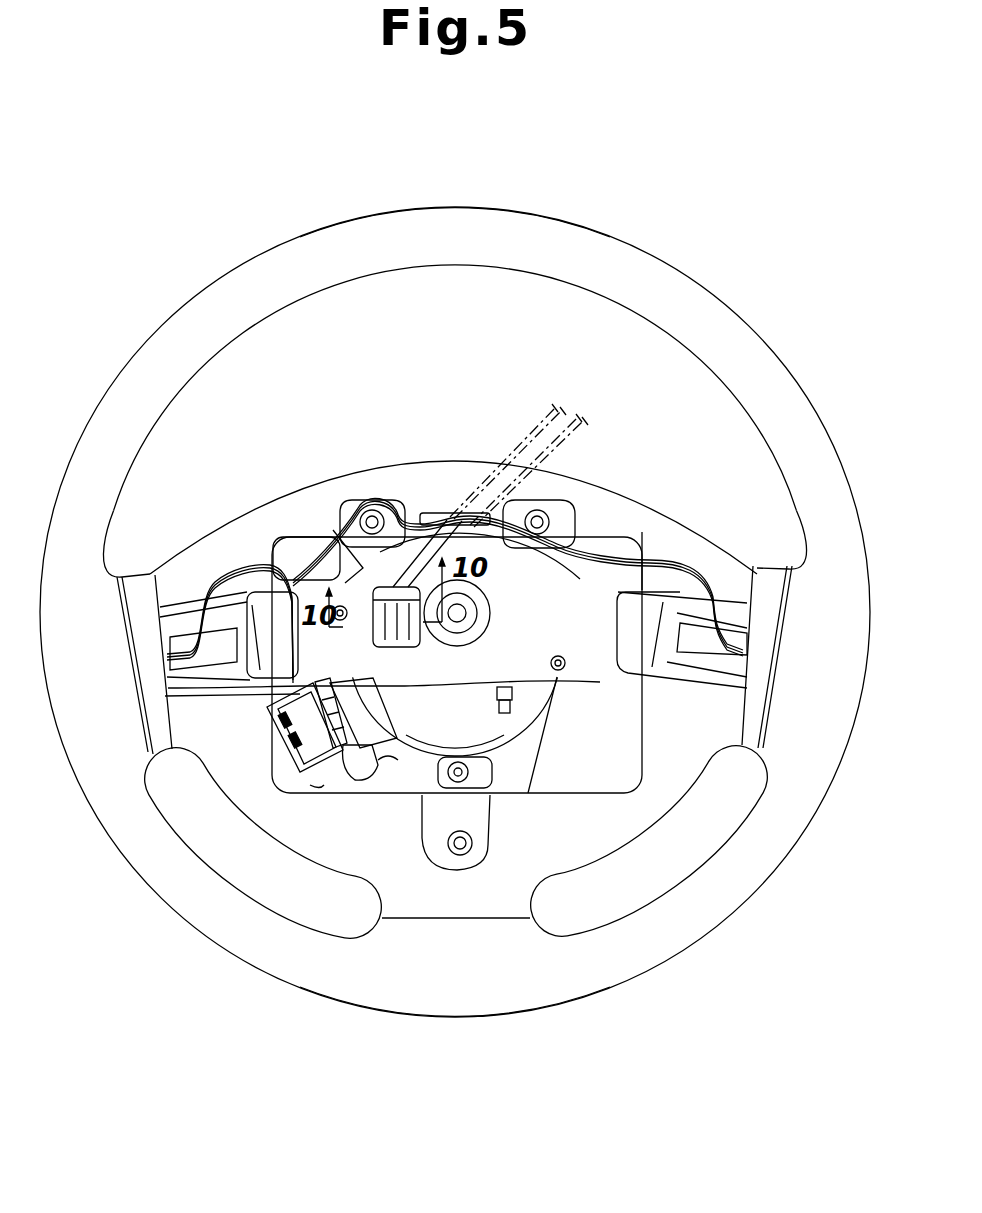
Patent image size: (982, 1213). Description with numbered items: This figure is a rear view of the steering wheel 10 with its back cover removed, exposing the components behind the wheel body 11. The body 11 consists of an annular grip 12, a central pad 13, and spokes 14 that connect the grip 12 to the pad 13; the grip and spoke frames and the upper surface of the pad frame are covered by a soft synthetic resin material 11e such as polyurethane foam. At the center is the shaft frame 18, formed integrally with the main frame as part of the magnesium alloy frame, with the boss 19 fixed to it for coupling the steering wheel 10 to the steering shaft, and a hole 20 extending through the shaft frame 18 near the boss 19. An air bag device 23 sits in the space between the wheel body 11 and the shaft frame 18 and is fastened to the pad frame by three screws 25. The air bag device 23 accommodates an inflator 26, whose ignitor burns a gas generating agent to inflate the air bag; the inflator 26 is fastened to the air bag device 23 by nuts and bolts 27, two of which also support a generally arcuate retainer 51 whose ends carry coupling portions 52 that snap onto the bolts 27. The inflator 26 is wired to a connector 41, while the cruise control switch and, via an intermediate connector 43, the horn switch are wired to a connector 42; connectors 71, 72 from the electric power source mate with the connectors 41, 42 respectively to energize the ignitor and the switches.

The steering wheel 10 is at (672, 217).
The body 11 is at (783, 360).
The soft synthetic resin material 11e is at (715, 930).
The annular grip 12 is at (458, 213).
The pad 13 is at (457, 462).
The spokes 14 is at (135, 585).
The shaft frame 18 is at (593, 657).
The boss 19 is at (467, 623).
The hole 20 is at (405, 648).
The air bag device 23 is at (690, 555).
The screws 25 is at (377, 506).
The inflator 26 is at (529, 730).
The bolts 27 is at (465, 768).
The connector 41 is at (353, 687).
The connector 42 is at (280, 748).
The intermediate connector 43 is at (337, 563).
The retainer 51 is at (357, 772).
The coupling portion 52 is at (481, 790).
The connector 71 is at (378, 768).
The connector 72 is at (318, 790).